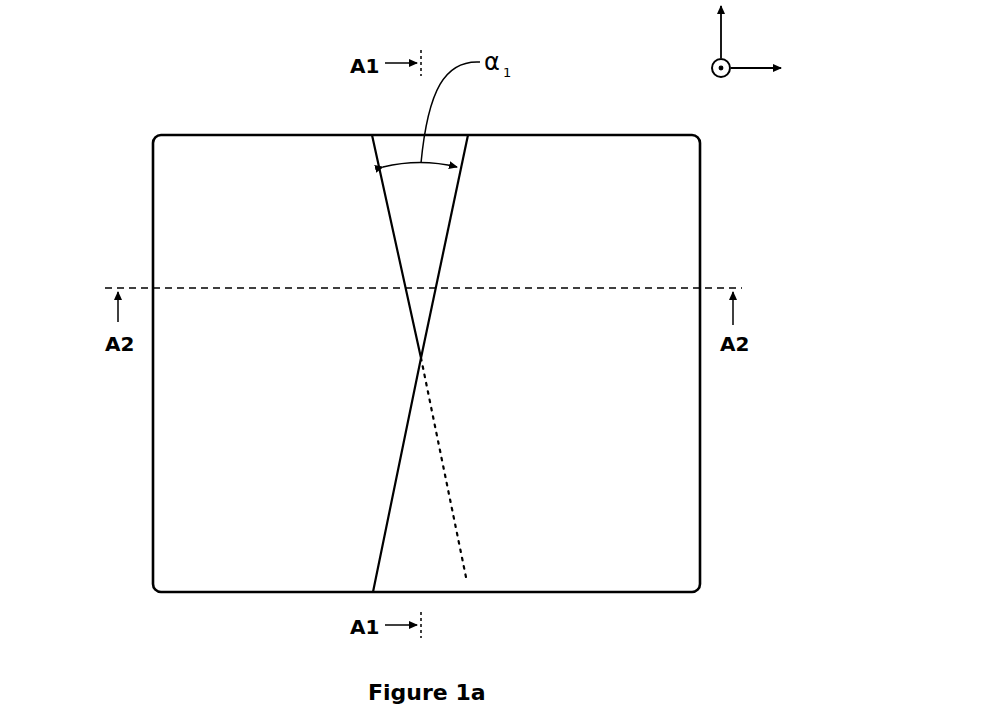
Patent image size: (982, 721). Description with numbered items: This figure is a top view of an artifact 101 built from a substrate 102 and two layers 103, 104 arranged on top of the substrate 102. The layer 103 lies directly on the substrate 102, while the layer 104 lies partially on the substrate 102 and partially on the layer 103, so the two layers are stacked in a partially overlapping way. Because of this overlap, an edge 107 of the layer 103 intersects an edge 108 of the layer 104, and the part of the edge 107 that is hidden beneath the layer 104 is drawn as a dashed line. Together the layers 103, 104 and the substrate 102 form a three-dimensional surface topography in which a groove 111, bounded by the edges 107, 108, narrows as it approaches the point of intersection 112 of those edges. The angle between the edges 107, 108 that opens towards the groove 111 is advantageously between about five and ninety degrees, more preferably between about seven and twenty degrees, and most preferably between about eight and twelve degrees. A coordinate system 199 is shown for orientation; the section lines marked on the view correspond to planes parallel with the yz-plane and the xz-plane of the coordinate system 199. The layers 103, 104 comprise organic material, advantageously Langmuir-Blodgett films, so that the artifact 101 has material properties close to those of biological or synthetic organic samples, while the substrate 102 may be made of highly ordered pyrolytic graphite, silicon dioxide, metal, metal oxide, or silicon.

The artifact 101 is at (270, 95).
The substrate 102 is at (420, 176).
The layer 103 is at (276, 403).
The layer 104 is at (595, 401).
The edge of the layer 103 107 is at (392, 233).
The edge of the layer 104 108 is at (447, 243).
The groove 111 is at (443, 152).
The point of intersection 112 is at (424, 361).
The coordinate system 199 is at (749, 53).